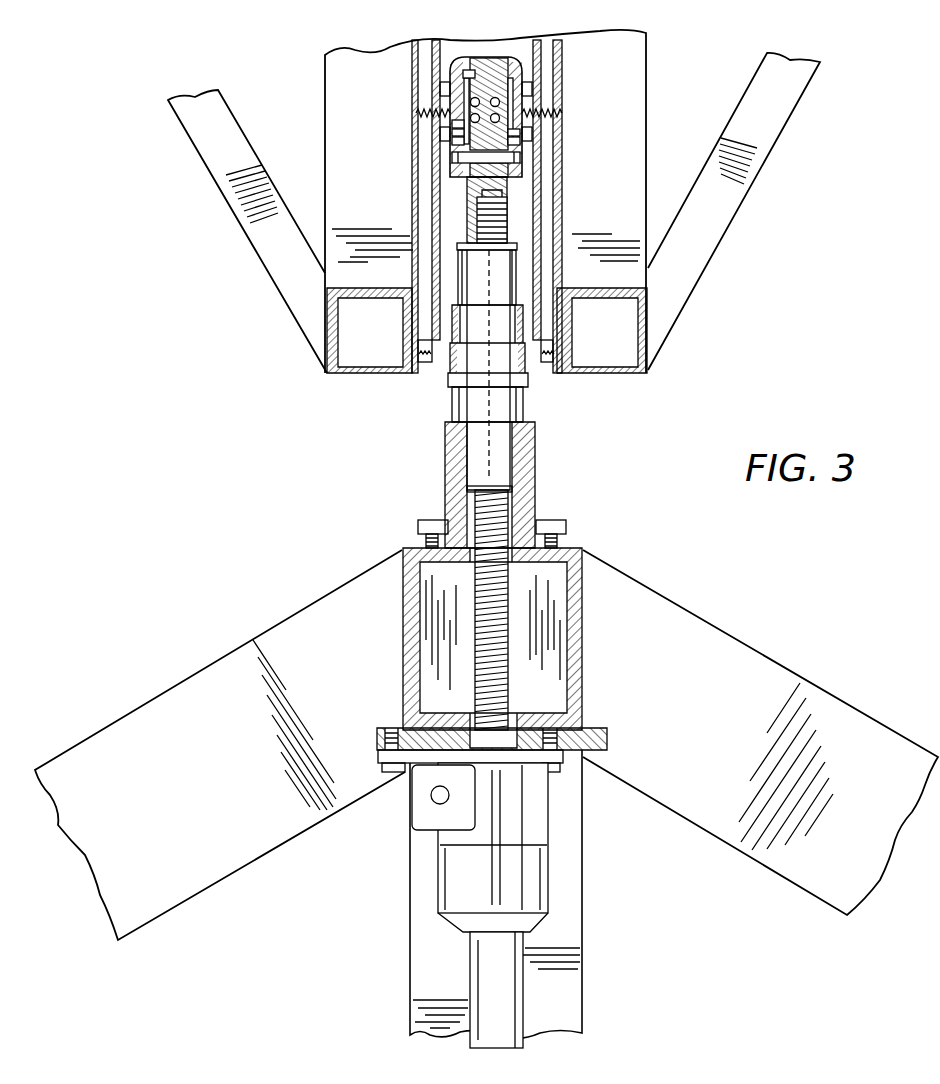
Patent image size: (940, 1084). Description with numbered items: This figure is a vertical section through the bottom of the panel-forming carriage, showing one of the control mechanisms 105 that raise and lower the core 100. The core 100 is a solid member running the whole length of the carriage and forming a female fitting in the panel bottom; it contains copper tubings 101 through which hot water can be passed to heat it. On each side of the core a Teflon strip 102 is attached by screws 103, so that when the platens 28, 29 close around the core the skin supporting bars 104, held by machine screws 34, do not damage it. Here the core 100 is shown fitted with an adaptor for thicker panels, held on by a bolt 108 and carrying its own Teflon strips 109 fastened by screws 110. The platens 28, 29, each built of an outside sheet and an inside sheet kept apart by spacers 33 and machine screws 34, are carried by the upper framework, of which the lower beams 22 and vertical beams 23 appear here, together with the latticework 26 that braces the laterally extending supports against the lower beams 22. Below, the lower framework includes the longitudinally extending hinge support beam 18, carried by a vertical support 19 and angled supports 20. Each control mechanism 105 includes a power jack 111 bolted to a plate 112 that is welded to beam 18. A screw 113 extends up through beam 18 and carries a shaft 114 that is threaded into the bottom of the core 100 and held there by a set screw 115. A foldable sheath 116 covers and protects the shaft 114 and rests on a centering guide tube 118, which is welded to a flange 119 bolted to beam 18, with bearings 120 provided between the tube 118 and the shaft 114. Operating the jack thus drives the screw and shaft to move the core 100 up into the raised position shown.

The hinge support beam 18 is at (577, 540).
The vertical support 19 is at (560, 972).
The angled supports 20 is at (273, 800).
The lower beams 22 is at (375, 374).
The vertical beams 23 is at (643, 127).
The latticework 26 is at (272, 252).
The platen 28 is at (408, 97).
The platen 29 is at (572, 62).
The spacers 33 is at (455, 133).
The machine screws 34 is at (420, 113).
The core 100 is at (486, 62).
The copper tubings 101 is at (468, 78).
The Teflon strip 102 is at (455, 140).
The screws 103 is at (510, 57).
The skin supporting bars 104 is at (445, 93).
The control mechanisms 105 is at (563, 444).
The bolt 108 is at (520, 165).
The Teflon strips 109 is at (452, 125).
The screws 110 is at (532, 88).
The power jack 111 is at (535, 868).
The plate 112 is at (607, 740).
The screw 113 is at (477, 615).
The shaft 114 is at (510, 400).
The set screw 115 is at (502, 217).
The foldable sheath 116 is at (450, 400).
The centering guide tube 118 is at (450, 472).
The flange 119 is at (418, 538).
The bearings 120 is at (515, 483).